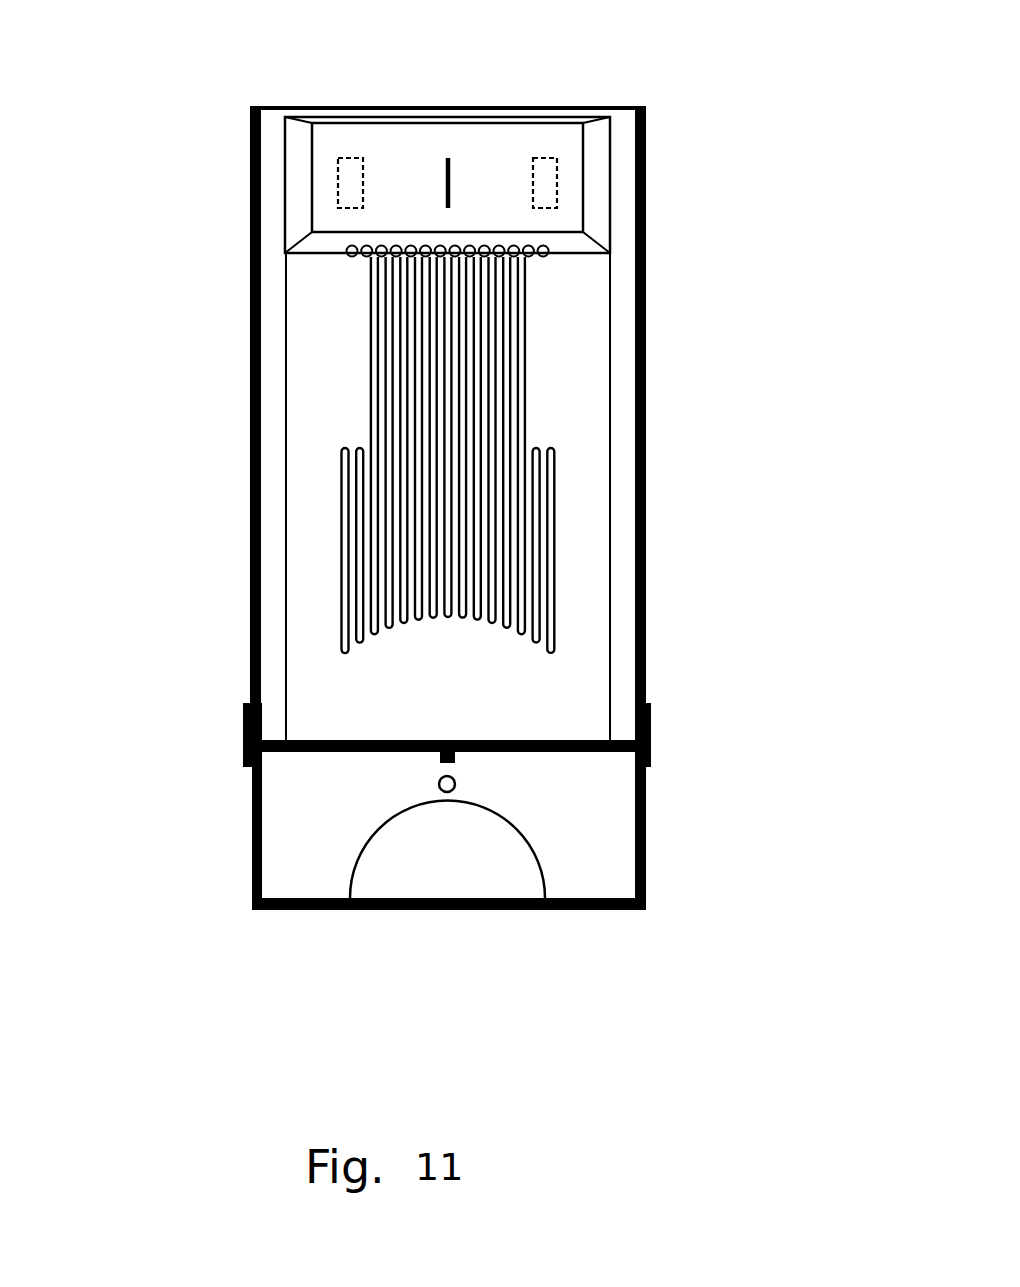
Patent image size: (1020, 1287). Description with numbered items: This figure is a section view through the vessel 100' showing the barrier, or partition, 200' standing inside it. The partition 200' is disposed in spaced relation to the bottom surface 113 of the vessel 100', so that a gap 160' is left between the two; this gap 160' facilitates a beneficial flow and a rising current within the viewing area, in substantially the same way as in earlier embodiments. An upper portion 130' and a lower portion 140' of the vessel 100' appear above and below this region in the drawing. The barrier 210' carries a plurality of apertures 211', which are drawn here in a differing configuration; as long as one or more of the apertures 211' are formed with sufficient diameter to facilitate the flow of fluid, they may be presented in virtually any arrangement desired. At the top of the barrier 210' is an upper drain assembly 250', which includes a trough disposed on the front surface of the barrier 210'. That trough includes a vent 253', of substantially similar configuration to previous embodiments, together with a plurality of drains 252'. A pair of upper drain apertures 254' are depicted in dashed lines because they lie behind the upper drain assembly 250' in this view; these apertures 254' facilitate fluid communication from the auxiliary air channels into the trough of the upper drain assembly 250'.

The vessel 100' is at (574, 160).
The upper housing portion 130' is at (346, 426).
The lower housing portion 140' is at (351, 806).
The bottom surface 113 is at (623, 735).
The gap 160' is at (234, 704).
The barrier 200' is at (542, 183).
The barrier 210' is at (522, 496).
The apertures 211' is at (556, 455).
The upper drain assembly 250' is at (472, 140).
The drains 252' is at (342, 276).
The vent 253' is at (489, 115).
The upper drain apertures 254' is at (517, 138).